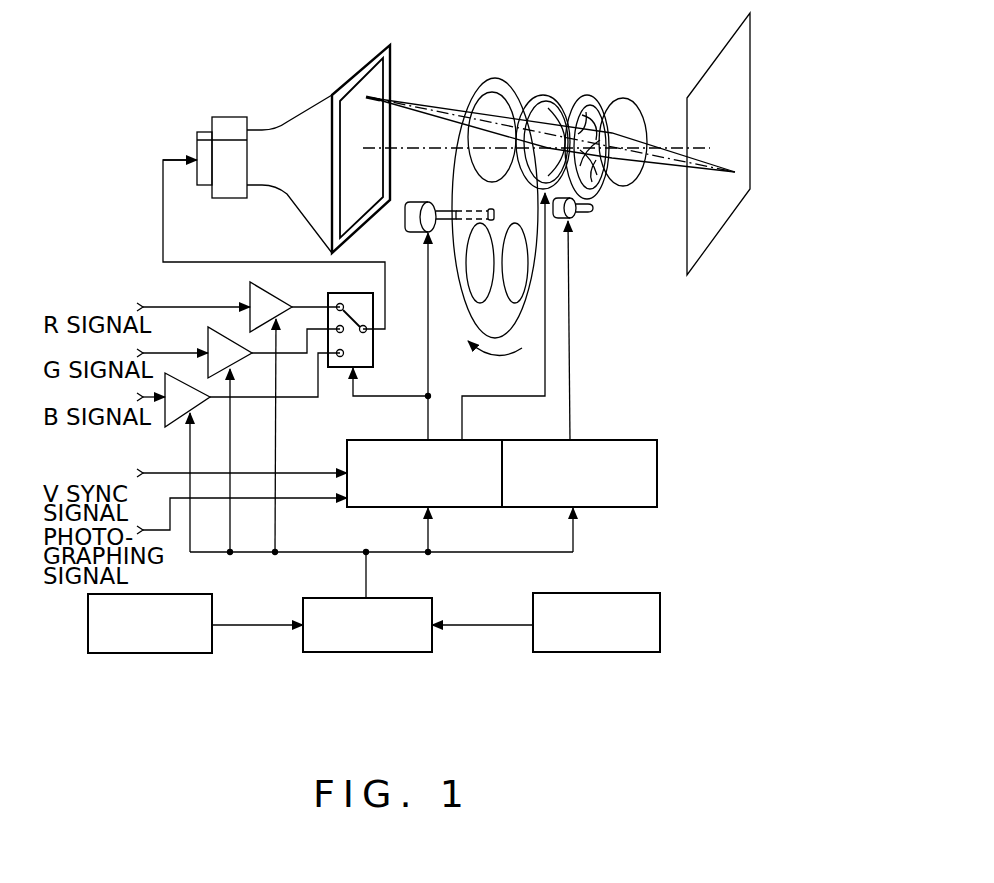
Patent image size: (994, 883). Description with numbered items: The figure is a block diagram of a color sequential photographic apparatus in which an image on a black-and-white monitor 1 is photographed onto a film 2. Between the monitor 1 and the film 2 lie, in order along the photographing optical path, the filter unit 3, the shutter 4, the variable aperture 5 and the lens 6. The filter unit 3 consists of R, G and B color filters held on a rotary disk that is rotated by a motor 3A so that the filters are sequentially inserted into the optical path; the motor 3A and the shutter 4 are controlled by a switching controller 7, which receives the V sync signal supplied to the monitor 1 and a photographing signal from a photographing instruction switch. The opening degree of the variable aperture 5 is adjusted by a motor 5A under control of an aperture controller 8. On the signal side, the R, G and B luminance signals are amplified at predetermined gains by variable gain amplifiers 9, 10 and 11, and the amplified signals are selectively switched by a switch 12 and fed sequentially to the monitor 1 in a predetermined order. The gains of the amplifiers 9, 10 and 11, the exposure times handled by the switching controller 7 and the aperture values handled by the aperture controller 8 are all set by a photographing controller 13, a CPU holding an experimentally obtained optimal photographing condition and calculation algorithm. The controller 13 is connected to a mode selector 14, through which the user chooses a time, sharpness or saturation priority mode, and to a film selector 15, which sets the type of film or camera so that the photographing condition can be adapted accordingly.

The black-and-white monitor 1 is at (389, 45).
The film 2 is at (708, 64).
The filter unit 3 is at (483, 79).
The motor 3A is at (427, 202).
The shutter 4 is at (549, 96).
The variable aperture 5 is at (600, 97).
The motor 5A is at (575, 214).
The lens 6 is at (628, 186).
The switching controller 7 is at (444, 509).
The aperture controller 8 is at (592, 509).
The variable gain amplifier 9 is at (252, 296).
The variable gain amplifier 10 is at (208, 348).
The variable gain amplifier 11 is at (197, 412).
The switch 12 is at (374, 351).
The photographing controller (CPU) 13 is at (376, 653).
The mode selector 14 is at (160, 654).
The film selector 15 is at (602, 654).